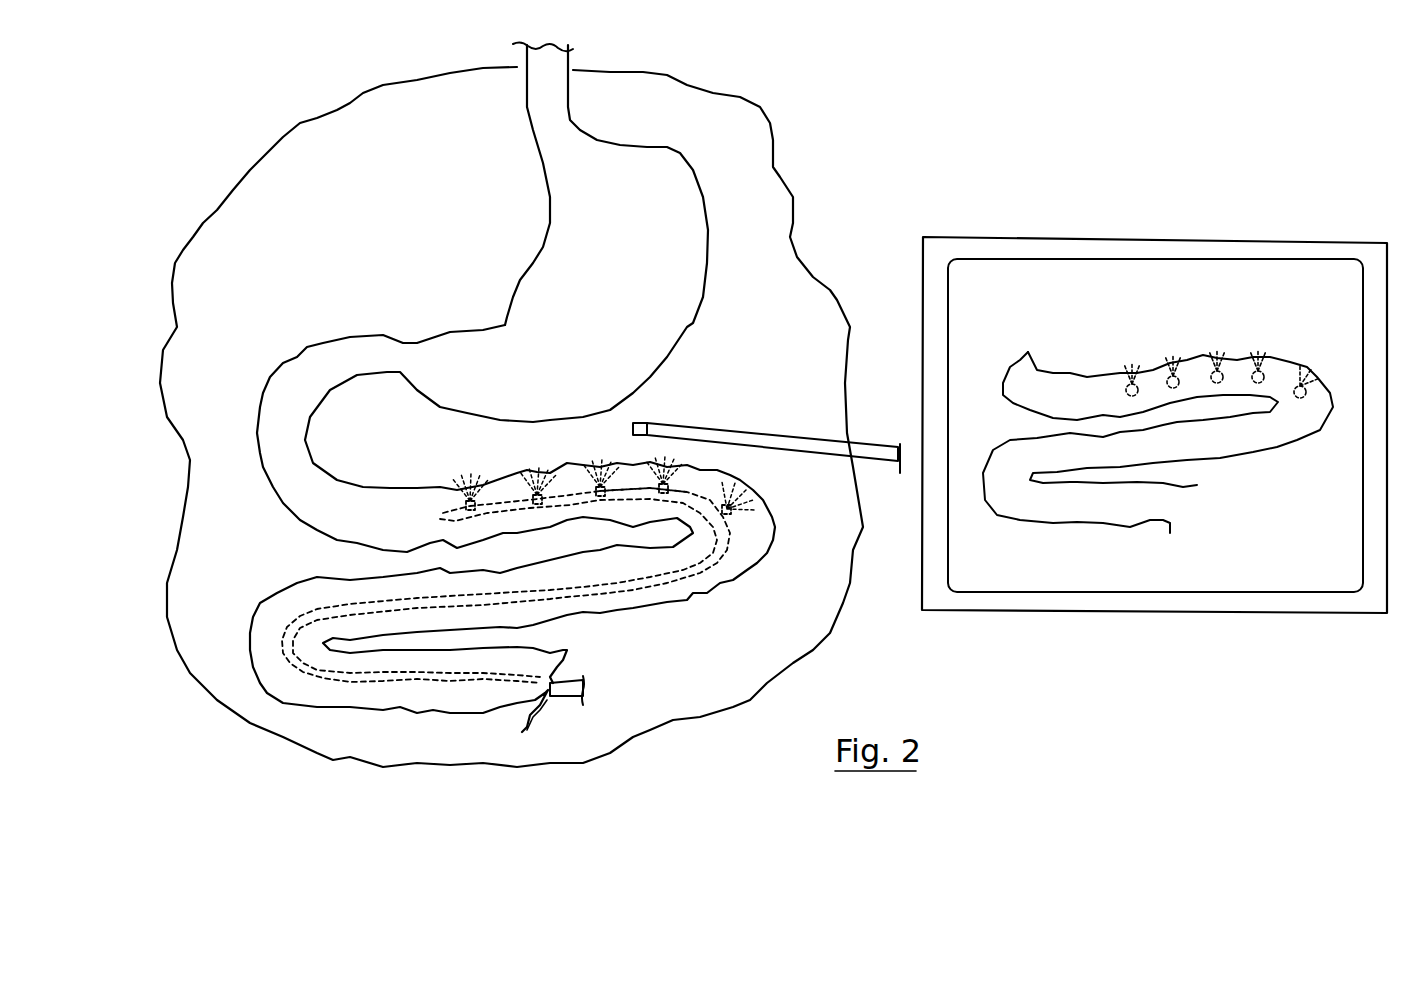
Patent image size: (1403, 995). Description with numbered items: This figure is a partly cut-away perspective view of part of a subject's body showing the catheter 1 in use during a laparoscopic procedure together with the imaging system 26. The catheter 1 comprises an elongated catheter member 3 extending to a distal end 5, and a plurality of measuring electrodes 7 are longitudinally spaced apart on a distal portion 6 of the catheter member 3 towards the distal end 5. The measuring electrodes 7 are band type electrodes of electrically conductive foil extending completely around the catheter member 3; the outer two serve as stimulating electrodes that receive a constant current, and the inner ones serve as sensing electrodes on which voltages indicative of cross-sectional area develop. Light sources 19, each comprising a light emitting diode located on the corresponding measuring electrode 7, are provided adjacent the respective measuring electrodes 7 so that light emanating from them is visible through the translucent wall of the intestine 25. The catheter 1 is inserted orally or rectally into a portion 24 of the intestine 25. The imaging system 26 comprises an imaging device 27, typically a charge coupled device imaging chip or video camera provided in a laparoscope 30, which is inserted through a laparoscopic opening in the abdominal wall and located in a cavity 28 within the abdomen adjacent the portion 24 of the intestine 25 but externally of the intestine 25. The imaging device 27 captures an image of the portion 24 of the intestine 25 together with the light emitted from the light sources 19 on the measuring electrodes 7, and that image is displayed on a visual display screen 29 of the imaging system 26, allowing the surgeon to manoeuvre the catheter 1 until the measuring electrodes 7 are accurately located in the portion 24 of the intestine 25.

The catheter 1 is at (562, 703).
The catheter member 3 is at (573, 498).
The distal end 5 is at (499, 591).
The distal portion 6 is at (633, 487).
The measuring electrodes 7 is at (463, 506).
The light sources 19 is at (463, 487).
The portion of the intestine 24 is at (433, 560).
The intestine 25 is at (628, 600).
The imaging system 26 is at (905, 190).
The imaging device 27 is at (643, 417).
The cavity 28 is at (747, 213).
The visual display screen 29 is at (1080, 613).
The laparoscope 30 is at (763, 440).